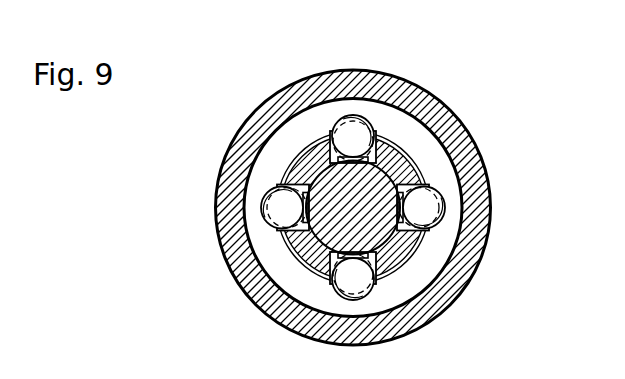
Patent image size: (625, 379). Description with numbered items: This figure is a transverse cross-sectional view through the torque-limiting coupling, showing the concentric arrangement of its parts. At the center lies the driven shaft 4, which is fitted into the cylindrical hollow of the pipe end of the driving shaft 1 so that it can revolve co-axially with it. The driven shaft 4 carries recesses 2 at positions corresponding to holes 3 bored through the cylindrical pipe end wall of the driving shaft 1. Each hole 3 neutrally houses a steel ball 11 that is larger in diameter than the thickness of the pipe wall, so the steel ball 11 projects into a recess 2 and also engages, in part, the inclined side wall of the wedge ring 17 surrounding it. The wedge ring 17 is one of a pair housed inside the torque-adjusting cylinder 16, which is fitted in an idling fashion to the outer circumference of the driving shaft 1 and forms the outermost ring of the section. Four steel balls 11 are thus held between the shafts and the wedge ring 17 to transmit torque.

The driving shaft 1 is at (407, 170).
The recesses 2 is at (343, 143).
The holes 3 is at (383, 138).
The driven shaft 4 is at (328, 188).
The steel ball 11 is at (272, 213).
The torque-adjusting cylinder 16 is at (230, 177).
The wedge ring 17 is at (278, 272).